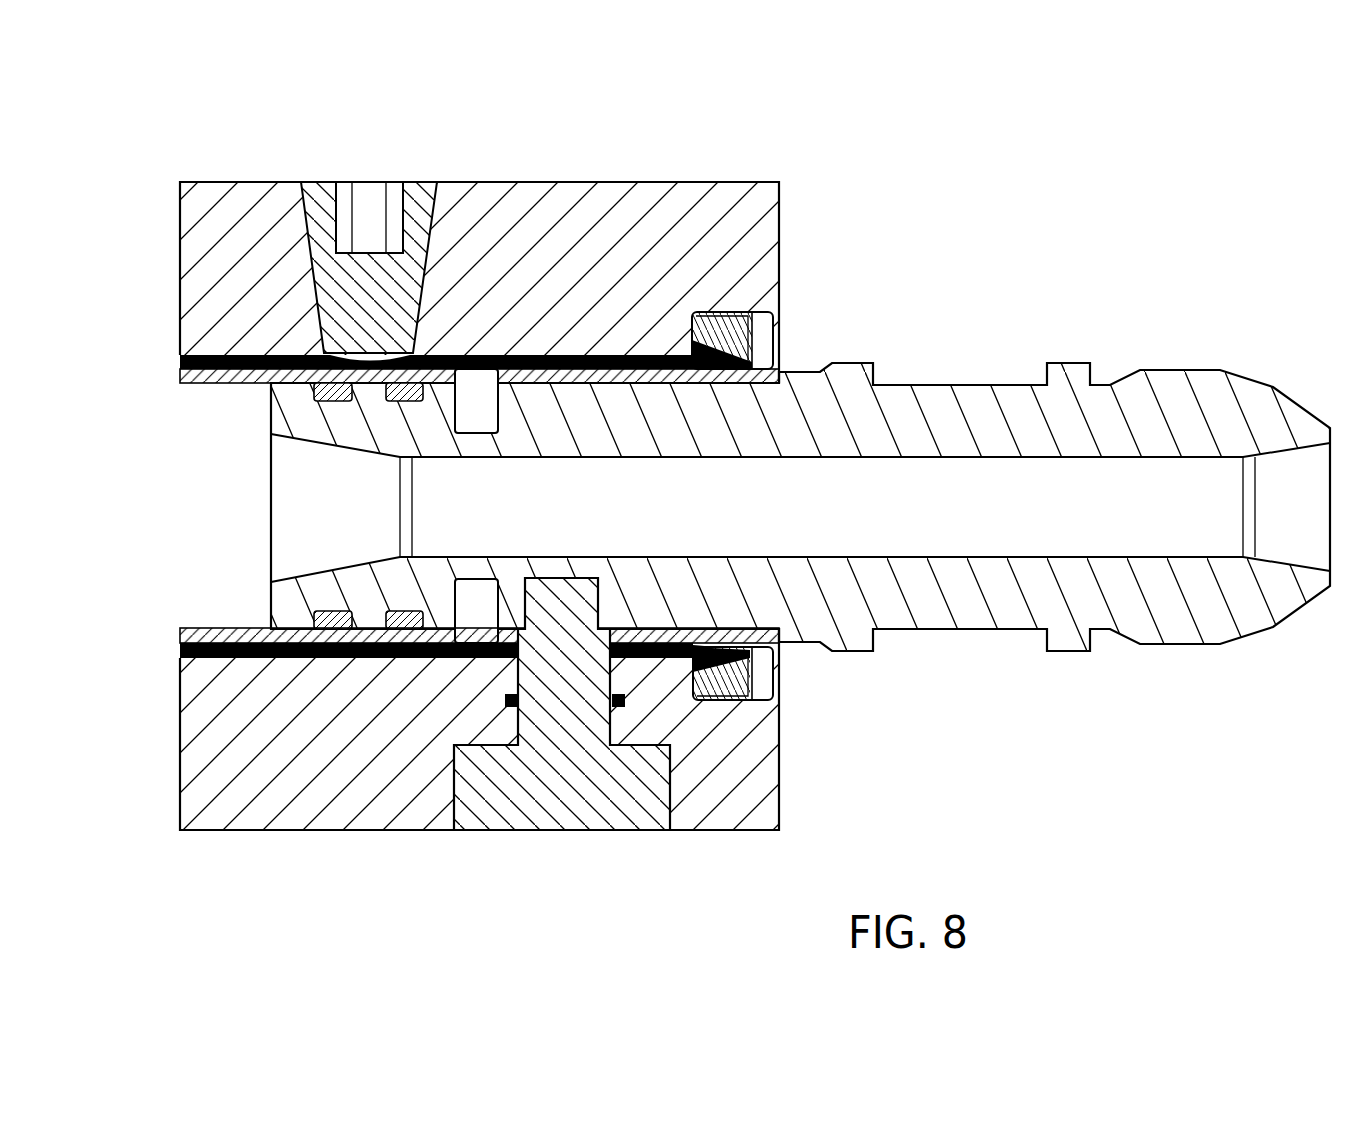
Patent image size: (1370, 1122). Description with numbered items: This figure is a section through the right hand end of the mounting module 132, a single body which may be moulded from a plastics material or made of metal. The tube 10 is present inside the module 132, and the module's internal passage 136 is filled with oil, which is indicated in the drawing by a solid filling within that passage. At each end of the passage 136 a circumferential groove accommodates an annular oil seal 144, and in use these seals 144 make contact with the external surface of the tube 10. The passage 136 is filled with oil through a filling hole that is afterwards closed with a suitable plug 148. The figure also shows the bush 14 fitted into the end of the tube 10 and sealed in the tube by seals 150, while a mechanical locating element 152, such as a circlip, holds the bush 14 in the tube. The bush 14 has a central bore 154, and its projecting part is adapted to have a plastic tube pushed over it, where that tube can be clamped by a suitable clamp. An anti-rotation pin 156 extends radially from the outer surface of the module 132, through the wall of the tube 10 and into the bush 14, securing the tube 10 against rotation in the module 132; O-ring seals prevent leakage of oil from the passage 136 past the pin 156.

The tube 10 is at (210, 380).
The bush 14 is at (1170, 355).
The module 132 is at (788, 192).
The internal passage 136 is at (176, 656).
The annular oil seal 144 is at (754, 343).
The plug 148 is at (414, 192).
The seals 150 is at (400, 396).
The mechanical locating element 152 is at (474, 592).
The central bore 154 is at (1008, 519).
The anti-rotation pin 156 is at (575, 833).